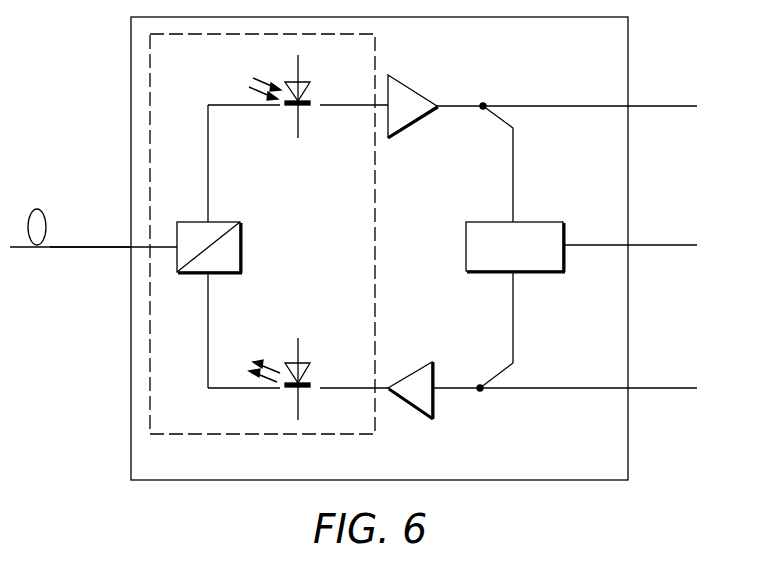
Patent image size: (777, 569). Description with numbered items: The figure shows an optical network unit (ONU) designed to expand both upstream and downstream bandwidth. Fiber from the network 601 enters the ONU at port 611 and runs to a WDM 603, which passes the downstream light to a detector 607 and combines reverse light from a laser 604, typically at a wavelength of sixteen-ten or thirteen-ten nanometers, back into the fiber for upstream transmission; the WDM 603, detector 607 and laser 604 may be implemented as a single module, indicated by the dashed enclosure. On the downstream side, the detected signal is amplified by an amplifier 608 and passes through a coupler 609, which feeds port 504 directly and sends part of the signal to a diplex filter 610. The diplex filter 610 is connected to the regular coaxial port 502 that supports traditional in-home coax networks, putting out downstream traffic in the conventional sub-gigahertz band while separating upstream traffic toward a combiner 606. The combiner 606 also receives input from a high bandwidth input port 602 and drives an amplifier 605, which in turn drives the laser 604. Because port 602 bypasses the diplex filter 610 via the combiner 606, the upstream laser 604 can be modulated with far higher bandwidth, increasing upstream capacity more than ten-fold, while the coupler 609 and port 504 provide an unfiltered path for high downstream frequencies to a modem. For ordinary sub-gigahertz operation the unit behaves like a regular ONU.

The fiber from the network 601 is at (37, 209).
The port 611 is at (92, 250).
The WDM 603 is at (228, 221).
The laser 604 is at (304, 363).
The amplifier 605 is at (412, 408).
The combiner 606 is at (481, 391).
The detector 607 is at (303, 82).
The amplifier 608 is at (413, 90).
The coupler 609 is at (485, 103).
The diplex filter 610 is at (548, 221).
The port 504 is at (660, 106).
The regular coaxial port 502 is at (660, 245).
The high bandwidth input port 602 is at (660, 388).